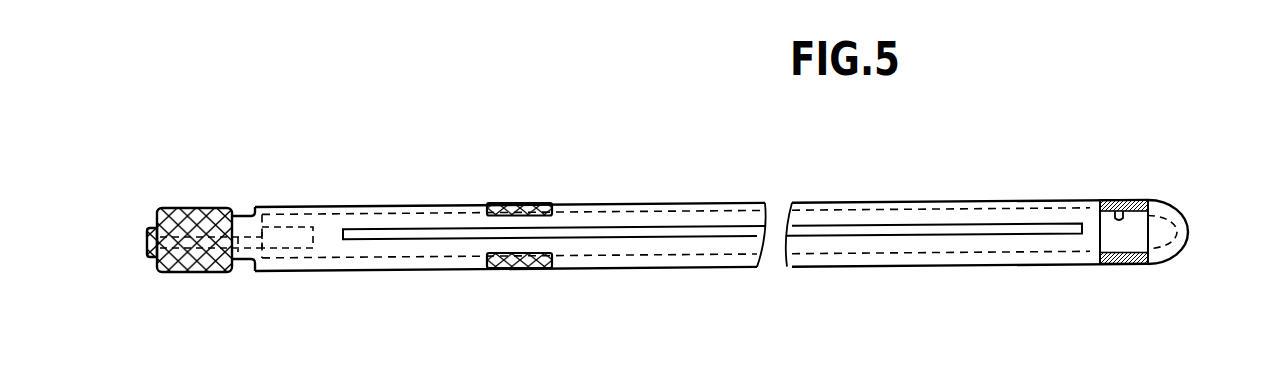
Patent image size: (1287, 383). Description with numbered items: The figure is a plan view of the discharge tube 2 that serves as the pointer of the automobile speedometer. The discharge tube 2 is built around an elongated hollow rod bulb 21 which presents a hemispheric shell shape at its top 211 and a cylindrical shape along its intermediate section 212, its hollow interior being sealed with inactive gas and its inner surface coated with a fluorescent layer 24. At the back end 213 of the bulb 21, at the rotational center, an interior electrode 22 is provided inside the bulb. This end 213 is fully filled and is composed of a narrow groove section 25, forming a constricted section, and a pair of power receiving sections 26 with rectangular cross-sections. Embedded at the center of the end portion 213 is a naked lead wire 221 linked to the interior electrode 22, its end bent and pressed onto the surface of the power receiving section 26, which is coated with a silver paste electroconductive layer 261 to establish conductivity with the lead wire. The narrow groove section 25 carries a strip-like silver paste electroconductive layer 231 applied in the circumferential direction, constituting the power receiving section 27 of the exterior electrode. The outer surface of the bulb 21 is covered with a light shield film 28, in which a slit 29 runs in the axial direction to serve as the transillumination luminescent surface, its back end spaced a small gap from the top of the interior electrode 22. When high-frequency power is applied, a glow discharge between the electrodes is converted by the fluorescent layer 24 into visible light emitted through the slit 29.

The discharge tube 2 is at (566, 204).
The bulb 21 is at (1120, 264).
The rounded distal tip 211 is at (1190, 230).
The tube wall 212 is at (705, 267).
The end of the bulb 213 is at (218, 208).
The interior electrode 22 is at (297, 272).
The naked lead wire 221 is at (238, 271).
The fluorescent layer 24 is at (1122, 212).
The narrow groove section 25 is at (245, 216).
The power receiving section 26 is at (183, 273).
The silver paste electroconductive layer 261 is at (183, 208).
The power receiving section of the exterior electrode 27 is at (510, 268).
The silver paste electroconductive layer 231 is at (537, 268).
The light shield film 28 is at (1110, 201).
The slit 29 is at (887, 226).